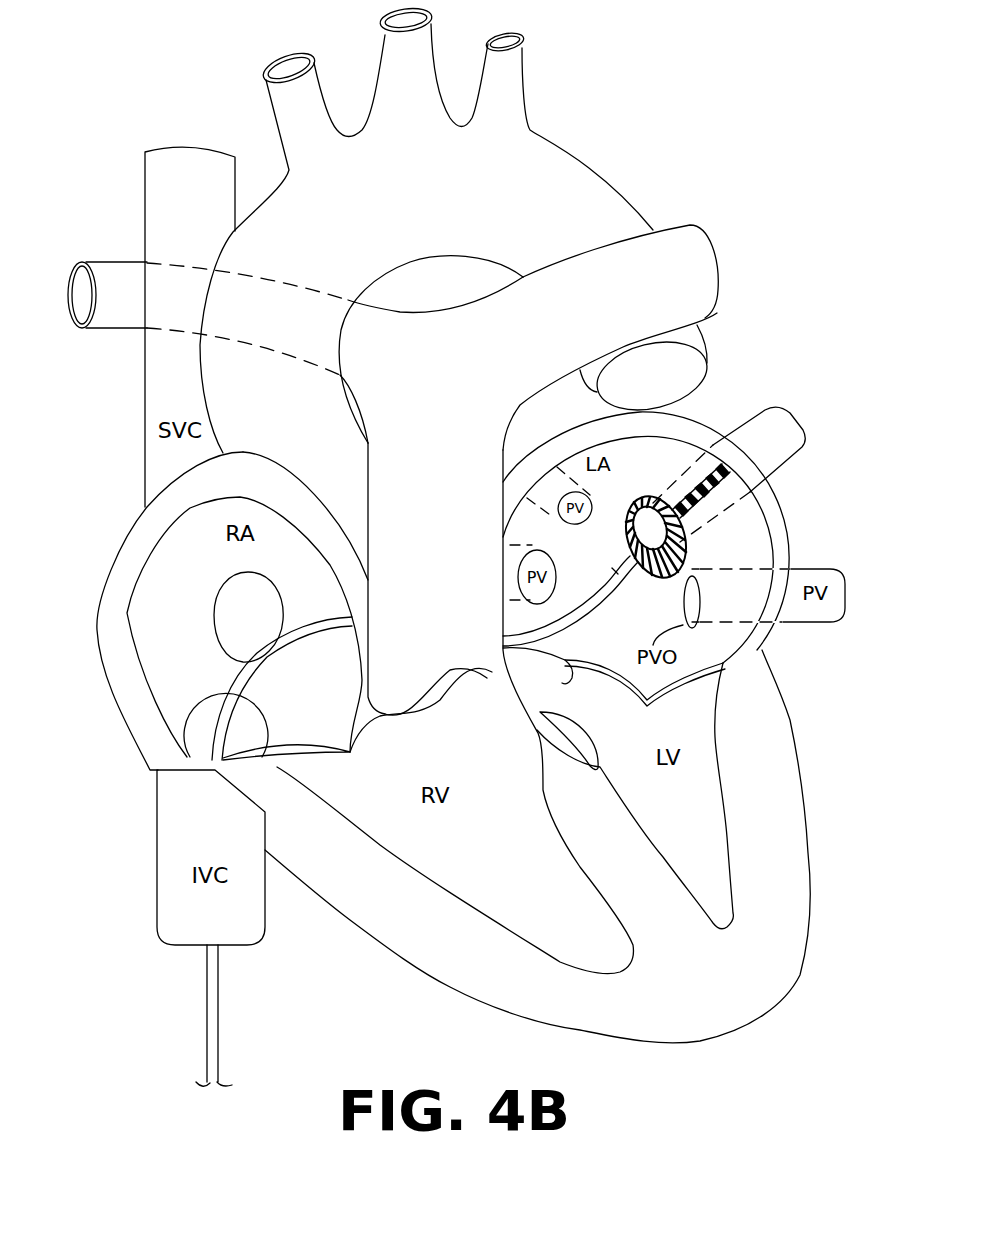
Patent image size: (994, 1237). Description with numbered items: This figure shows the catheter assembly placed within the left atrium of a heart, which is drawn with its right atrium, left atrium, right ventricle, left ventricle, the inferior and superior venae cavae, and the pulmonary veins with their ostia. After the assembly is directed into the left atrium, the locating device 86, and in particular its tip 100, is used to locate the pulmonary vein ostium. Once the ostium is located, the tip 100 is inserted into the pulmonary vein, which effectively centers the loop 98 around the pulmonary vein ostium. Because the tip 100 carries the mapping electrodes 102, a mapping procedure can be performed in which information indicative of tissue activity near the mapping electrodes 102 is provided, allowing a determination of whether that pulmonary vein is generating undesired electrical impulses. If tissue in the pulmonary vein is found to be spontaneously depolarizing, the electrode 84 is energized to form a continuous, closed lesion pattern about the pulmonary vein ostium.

The electrode 84 is at (650, 578).
The locating device 86 is at (700, 510).
The loop 98 is at (672, 575).
The tip 100 is at (706, 470).
The mapping electrodes 102 is at (702, 487).